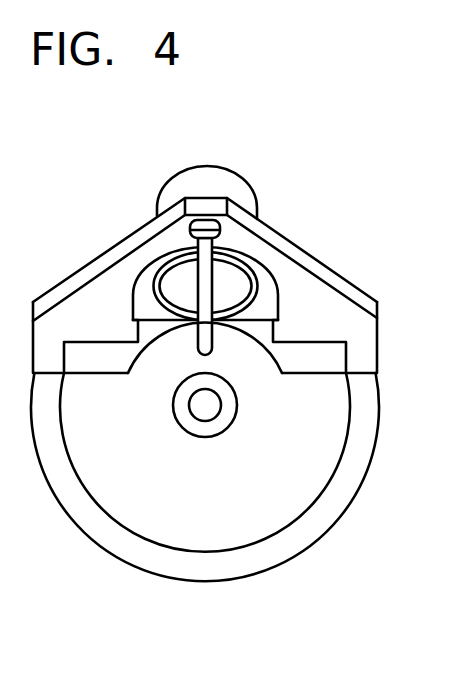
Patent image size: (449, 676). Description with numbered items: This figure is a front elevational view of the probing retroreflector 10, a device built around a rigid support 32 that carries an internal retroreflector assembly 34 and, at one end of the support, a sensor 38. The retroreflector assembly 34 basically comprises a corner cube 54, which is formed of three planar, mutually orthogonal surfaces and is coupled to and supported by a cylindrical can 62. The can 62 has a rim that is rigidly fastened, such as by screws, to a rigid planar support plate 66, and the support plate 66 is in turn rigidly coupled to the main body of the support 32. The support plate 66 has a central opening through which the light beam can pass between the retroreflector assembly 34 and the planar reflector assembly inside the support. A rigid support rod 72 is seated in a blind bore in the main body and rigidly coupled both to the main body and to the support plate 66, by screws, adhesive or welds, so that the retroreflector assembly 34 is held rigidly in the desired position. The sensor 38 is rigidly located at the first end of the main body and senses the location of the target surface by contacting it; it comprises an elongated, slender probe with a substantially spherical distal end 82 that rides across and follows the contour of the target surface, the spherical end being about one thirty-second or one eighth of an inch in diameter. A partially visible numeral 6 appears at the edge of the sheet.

The cartridge assembly 10 is at (323, 172).
The inclined wall 66 is at (322, 265).
The housing base 34 is at (256, 163).
The dome cap 62 is at (193, 166).
The ring 54 is at (237, 290).
The pin 72 is at (217, 343).
The disk 38 is at (259, 417).
The outer rim 32 is at (97, 557).
The hub 82 is at (212, 418).
The partial numeral (cut off) 6 is at (440, 339).